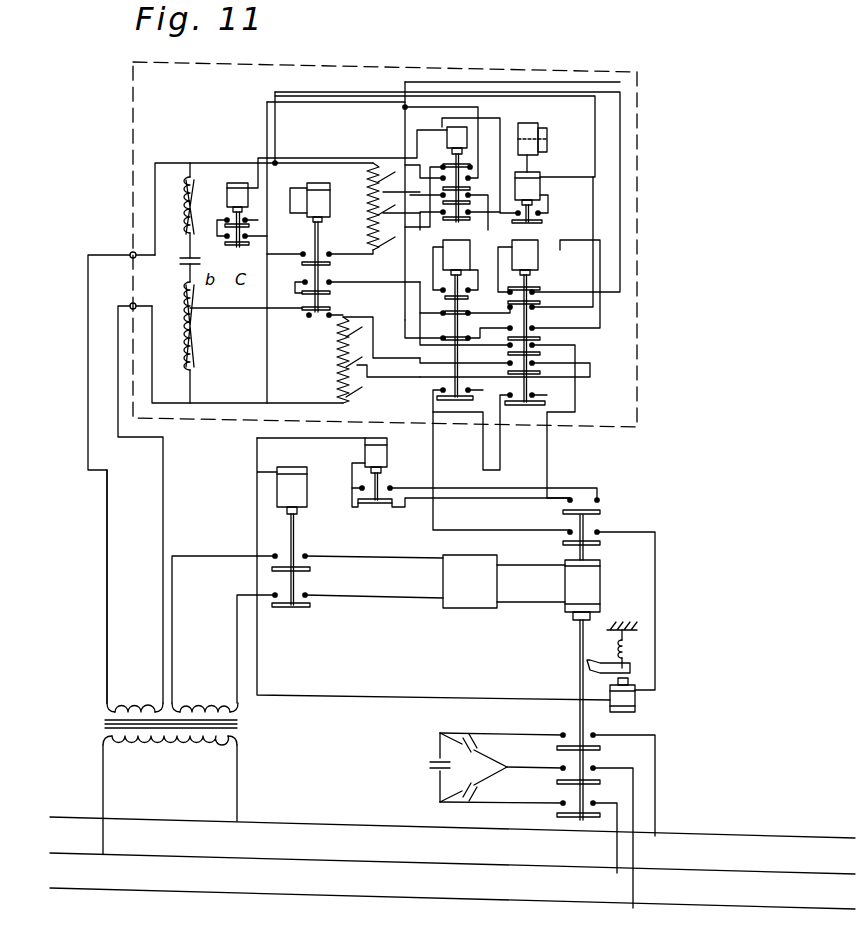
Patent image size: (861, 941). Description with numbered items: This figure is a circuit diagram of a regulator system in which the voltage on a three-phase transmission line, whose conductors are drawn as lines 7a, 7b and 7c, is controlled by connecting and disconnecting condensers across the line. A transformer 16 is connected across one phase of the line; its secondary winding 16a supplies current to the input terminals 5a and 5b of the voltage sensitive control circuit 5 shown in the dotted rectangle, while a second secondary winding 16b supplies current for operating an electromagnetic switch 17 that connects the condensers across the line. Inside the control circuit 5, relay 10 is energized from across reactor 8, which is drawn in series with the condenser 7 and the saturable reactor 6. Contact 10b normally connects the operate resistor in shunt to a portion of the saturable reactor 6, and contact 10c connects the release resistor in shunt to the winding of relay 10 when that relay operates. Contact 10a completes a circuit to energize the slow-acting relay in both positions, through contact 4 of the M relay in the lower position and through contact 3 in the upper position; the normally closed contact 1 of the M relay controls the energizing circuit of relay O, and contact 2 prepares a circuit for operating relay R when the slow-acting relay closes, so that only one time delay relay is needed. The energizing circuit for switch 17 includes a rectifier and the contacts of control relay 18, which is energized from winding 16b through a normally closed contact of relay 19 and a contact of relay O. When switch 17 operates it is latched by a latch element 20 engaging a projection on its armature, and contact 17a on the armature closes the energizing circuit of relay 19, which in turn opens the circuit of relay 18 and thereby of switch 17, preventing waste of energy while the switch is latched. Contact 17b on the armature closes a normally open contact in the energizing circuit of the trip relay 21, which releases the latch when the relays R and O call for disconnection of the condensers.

The voltage sensitive control circuit 5 is at (637, 368).
The input terminal 5a is at (130, 254).
The input terminal 5b is at (130, 305).
The saturable reactor 6 is at (178, 326).
The condenser 7 is at (179, 262).
The reactor 8 is at (178, 205).
The relay 10 is at (328, 177).
The contact of relay 10 10a is at (331, 289).
The contact of relay 10 10b is at (309, 318).
The contact of relay 10 10c is at (303, 266).
The contact of relay M 1 is at (472, 160).
The contact of relay M 2 is at (476, 180).
The contact of relay M 3 is at (476, 195).
The contact of relay M 4 is at (472, 217).
The transformer 16 is at (100, 727).
The secondary winding 16a is at (133, 702).
The second secondary winding 16b is at (201, 702).
The electromagnetic switch 17 is at (590, 582).
The contact of switch 17 17a is at (600, 512).
The contact of switch 17 17b is at (600, 543).
The control relay 18 is at (315, 480).
The relay 19 is at (387, 450).
The latch element 20 is at (630, 668).
The trip relay 21 is at (635, 700).
The supply line 7a is at (436, 821).
The supply line 7b is at (436, 857).
The supply line 7c is at (436, 892).